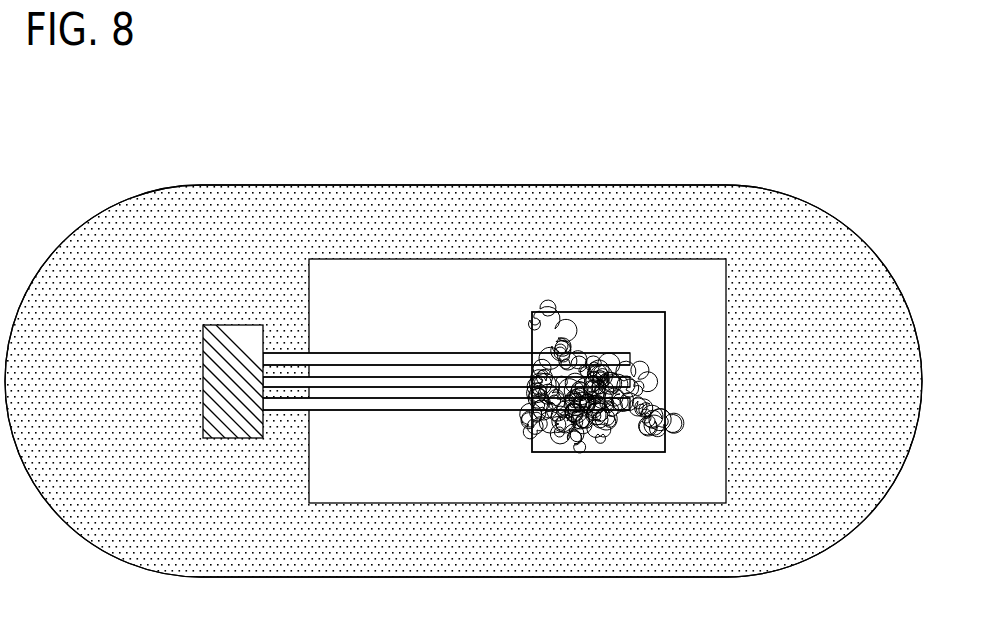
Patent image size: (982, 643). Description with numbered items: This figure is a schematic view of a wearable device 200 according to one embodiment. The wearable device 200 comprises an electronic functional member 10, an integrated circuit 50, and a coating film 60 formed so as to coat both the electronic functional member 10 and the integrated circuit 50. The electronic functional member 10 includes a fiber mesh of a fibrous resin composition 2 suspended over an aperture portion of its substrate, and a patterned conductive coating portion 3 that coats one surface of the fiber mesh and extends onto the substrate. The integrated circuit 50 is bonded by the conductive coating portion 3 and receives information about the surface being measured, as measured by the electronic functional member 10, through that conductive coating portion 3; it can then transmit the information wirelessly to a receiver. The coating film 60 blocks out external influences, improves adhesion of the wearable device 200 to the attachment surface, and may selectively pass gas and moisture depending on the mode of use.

The wearable device 200 is at (704, 107).
The coating film 60 is at (803, 242).
The electronic functional member 10 is at (631, 259).
The conductive coating portion 3 is at (408, 353).
The integrated circuit 50 is at (240, 325).
The fibrous resin composition 2 is at (554, 312).